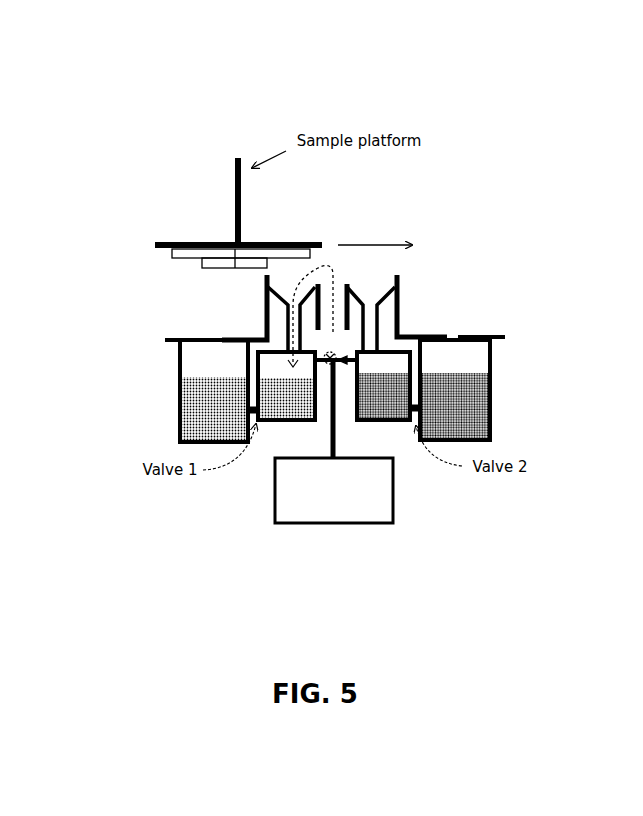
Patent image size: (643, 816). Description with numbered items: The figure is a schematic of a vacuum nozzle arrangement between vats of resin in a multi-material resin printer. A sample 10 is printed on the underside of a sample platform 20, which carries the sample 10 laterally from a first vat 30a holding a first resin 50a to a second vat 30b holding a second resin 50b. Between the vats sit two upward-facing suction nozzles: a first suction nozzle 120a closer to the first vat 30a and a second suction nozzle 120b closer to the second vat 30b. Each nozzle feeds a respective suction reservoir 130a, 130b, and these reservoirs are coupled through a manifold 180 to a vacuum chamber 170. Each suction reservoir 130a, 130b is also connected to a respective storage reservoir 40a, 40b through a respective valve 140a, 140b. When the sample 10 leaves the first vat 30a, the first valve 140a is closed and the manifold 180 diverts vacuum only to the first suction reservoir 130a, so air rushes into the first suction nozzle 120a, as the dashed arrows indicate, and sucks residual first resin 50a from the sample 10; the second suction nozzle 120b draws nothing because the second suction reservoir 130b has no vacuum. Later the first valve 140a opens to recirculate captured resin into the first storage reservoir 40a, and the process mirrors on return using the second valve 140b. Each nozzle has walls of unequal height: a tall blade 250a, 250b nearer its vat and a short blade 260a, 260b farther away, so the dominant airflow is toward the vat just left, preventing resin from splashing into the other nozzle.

The sample 10 is at (213, 262).
The sample platform 20 is at (227, 243).
The first vat 30a is at (195, 355).
The second vat 30b is at (468, 335).
The first storage reservoir 40a is at (182, 340).
The second storage reservoir 40b is at (480, 345).
The first resin 50a is at (193, 423).
The second resin 50b is at (492, 398).
The first suction nozzle 120a is at (287, 292).
The second suction nozzle 120b is at (376, 290).
The first suction reservoir 130a is at (290, 413).
The second suction reservoir 130b is at (390, 418).
The first valve 140a is at (247, 405).
The second valve 140b is at (414, 400).
The vacuum chamber 170 is at (318, 510).
The manifold 180 is at (338, 365).
The first tall blade 250a is at (268, 278).
The second tall blade 250b is at (399, 275).
The first short blade 260a is at (318, 285).
The second short blade 260b is at (347, 285).